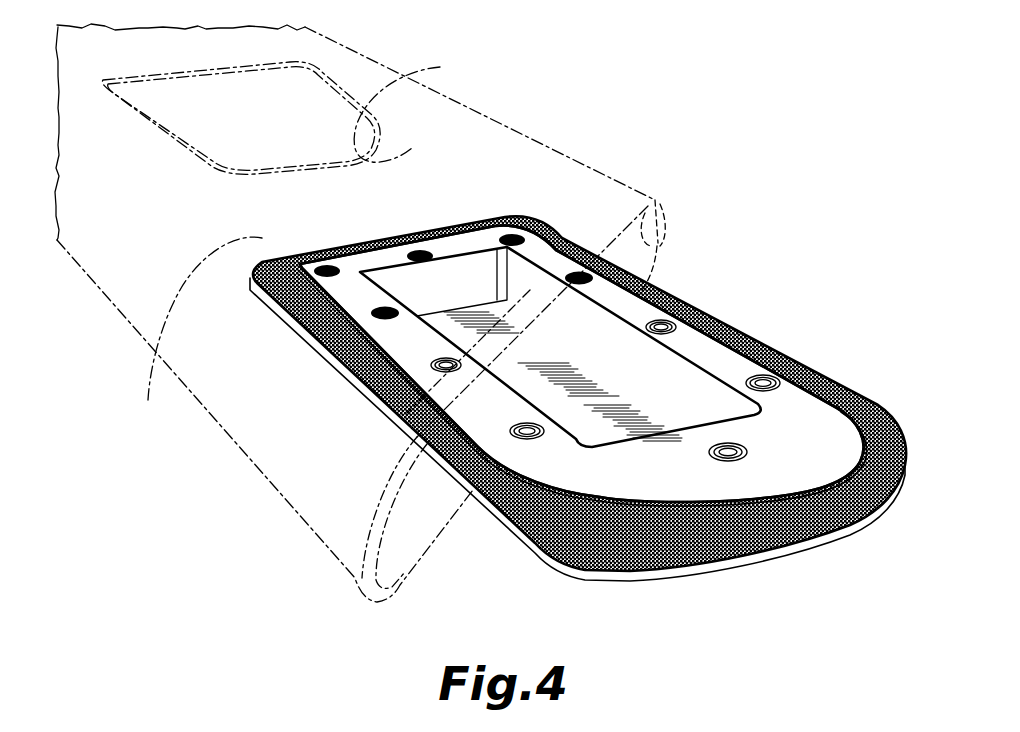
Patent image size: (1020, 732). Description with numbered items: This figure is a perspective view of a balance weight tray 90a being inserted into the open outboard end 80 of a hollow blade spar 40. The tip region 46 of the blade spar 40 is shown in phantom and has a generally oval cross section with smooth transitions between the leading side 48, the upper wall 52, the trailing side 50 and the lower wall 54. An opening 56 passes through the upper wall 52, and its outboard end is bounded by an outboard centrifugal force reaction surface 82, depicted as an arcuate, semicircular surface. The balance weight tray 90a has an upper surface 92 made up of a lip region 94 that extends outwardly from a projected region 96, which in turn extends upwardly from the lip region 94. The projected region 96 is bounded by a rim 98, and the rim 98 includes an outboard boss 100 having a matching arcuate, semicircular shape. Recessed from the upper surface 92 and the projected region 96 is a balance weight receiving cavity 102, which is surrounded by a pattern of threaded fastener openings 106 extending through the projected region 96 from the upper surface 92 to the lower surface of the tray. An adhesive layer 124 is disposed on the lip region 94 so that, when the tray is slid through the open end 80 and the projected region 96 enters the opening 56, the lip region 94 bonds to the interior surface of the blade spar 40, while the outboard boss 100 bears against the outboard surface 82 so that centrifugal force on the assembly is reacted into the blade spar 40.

The blade spar 40 is at (601, 162).
The tip region 46 is at (492, 120).
The leading side 48 is at (660, 242).
The trailing side 50 is at (258, 450).
The upper wall 52 is at (198, 329).
The lower wall 54 is at (420, 517).
The opening 56 is at (325, 45).
The open outboard end 80 is at (399, 580).
The outboard centrifugal force reaction surface 82 is at (440, 67).
The balance weight tray 90a is at (805, 415).
The upper surface 92 is at (863, 470).
The lip region 94 is at (883, 447).
The projected region 96 is at (717, 347).
The rim 98 is at (773, 500).
The outboard boss 100 is at (813, 487).
The balance weight receiving cavity 102 is at (633, 350).
The threaded fastener openings 106 is at (767, 370).
The adhesive layer 124 is at (587, 547).